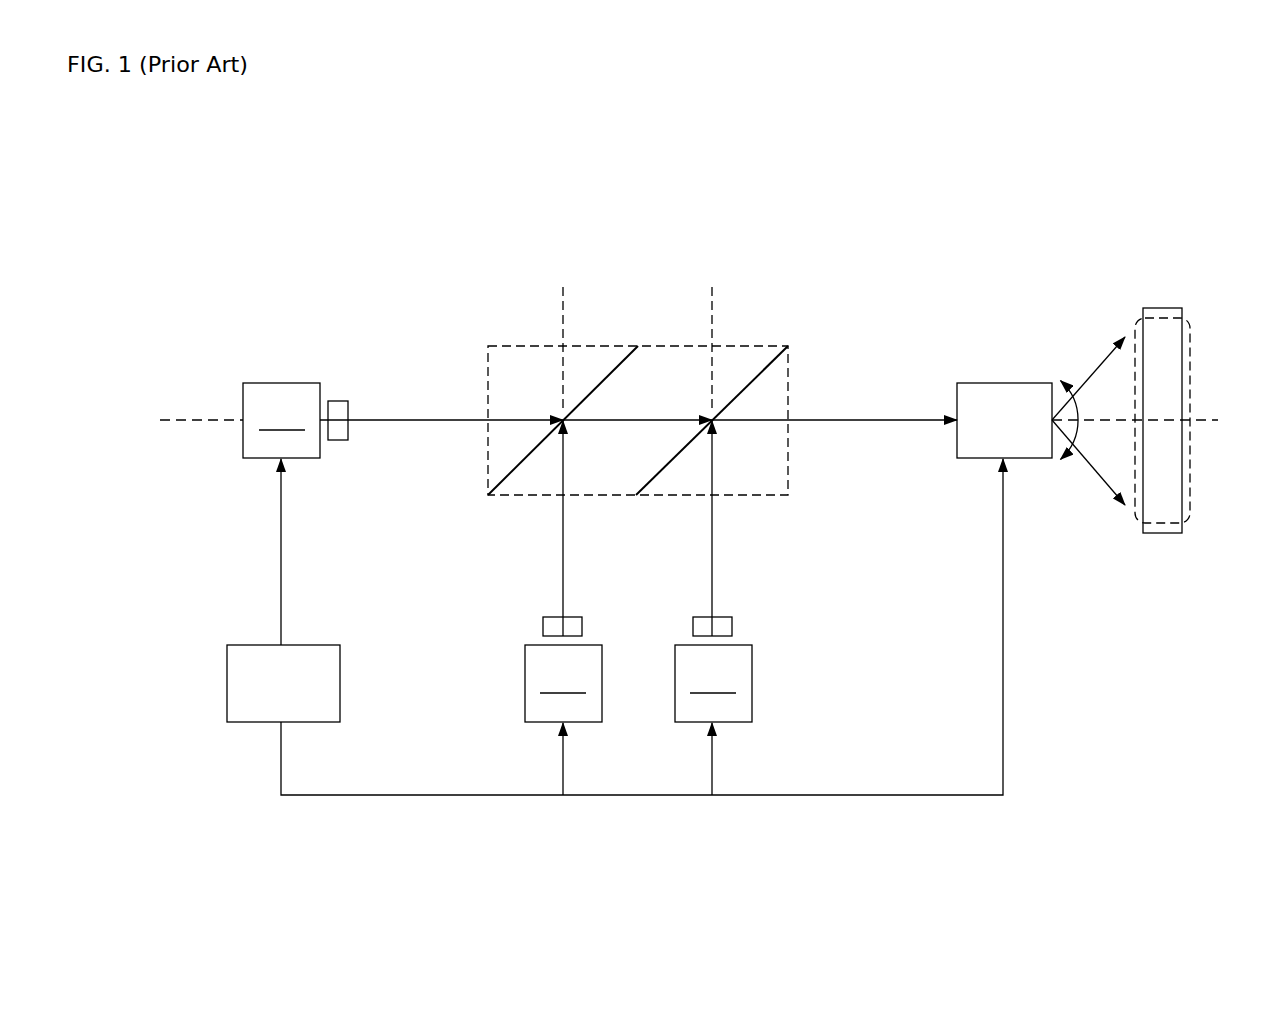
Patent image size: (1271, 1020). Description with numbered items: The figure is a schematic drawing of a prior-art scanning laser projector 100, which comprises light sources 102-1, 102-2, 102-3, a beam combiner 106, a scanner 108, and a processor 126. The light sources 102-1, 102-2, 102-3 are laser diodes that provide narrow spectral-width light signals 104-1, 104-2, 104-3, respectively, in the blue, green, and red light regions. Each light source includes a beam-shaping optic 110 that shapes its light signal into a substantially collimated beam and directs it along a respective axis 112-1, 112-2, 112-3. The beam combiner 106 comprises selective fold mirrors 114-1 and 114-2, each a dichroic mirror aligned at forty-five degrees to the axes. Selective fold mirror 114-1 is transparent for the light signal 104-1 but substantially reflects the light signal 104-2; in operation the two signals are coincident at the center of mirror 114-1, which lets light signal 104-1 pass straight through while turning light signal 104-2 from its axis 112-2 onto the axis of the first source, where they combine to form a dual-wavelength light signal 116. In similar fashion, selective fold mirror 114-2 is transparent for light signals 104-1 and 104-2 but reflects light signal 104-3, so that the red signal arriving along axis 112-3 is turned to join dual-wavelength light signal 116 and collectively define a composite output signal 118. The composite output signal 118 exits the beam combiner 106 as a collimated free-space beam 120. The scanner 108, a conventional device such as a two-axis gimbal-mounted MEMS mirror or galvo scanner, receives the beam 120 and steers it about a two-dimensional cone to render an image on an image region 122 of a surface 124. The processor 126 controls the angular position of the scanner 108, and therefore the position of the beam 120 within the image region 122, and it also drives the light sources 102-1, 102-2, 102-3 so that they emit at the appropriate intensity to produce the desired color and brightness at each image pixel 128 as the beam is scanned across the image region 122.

The projector 100 is at (226, 234).
The light source 102-1 is at (281, 420).
The light source 102-2 is at (563, 683).
The light source 102-3 is at (713, 683).
The light signal 104-1 is at (452, 420).
The light signal 104-2 is at (570, 513).
The light signal 104-3 is at (720, 513).
The beam combiner 106 is at (474, 325).
The scanner 108 is at (1003, 383).
The beam-shaping optic 110 is at (338, 442).
The axis 112-1 is at (185, 420).
The axis 112-2 is at (563, 307).
The axis 112-3 is at (712, 307).
The selective fold mirror 114-1 is at (591, 393).
The selective fold mirror 114-2 is at (741, 393).
The dual-wavelength light signal 116 is at (615, 422).
The composite output signal 118 is at (765, 422).
The collimated free-space beam 120 is at (865, 418).
The image region 122 is at (1192, 495).
The surface 124 is at (1160, 308).
The processor 126 is at (227, 685).
The image pixel 128 is at (1105, 517).